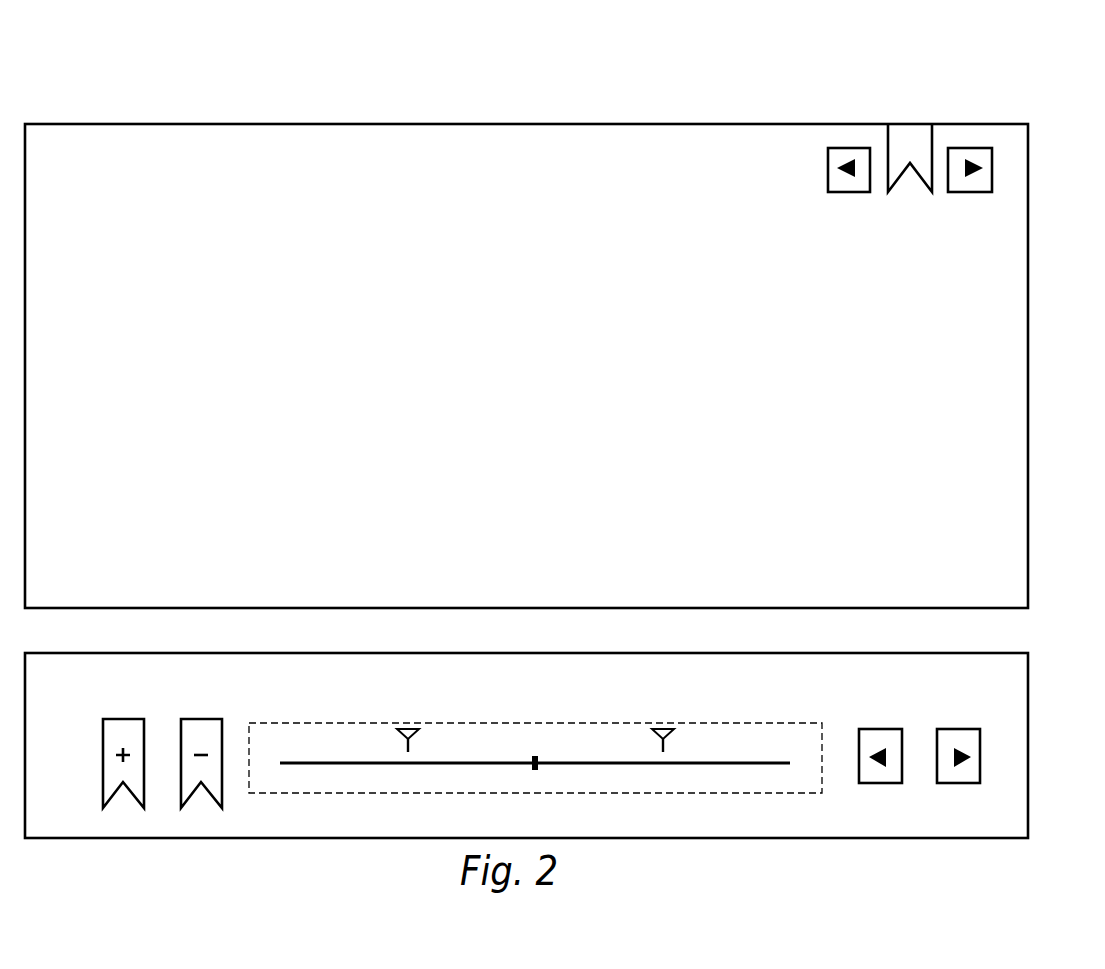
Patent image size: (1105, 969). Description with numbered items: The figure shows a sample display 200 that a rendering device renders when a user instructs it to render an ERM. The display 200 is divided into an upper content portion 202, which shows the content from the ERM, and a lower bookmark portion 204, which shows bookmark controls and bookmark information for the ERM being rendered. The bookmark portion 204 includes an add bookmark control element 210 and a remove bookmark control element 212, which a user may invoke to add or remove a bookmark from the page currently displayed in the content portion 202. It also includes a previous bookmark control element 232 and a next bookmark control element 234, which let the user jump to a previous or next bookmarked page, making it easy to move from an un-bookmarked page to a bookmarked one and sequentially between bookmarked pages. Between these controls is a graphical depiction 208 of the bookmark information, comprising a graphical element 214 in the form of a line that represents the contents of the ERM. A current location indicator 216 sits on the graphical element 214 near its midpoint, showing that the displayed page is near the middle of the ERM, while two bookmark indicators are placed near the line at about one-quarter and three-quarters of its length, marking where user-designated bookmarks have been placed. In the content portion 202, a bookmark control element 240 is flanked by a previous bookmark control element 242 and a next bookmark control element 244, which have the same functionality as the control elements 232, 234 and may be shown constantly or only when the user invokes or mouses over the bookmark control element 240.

The display 200 is at (126, 44).
The content portion 202 is at (1028, 176).
The bookmark portion 204 is at (1028, 673).
The graphical depiction 208 is at (280, 723).
The add bookmark control element 210 is at (103, 757).
The remove bookmark control element 212 is at (181, 726).
The graphical element 214 is at (757, 763).
The current location indicator 216 is at (535, 755).
The previous bookmark control element 232 is at (879, 729).
The next bookmark control element 234 is at (957, 729).
The bookmark control element 240 is at (895, 183).
The previous bookmark control element 242 is at (849, 192).
The next bookmark control element 244 is at (970, 192).